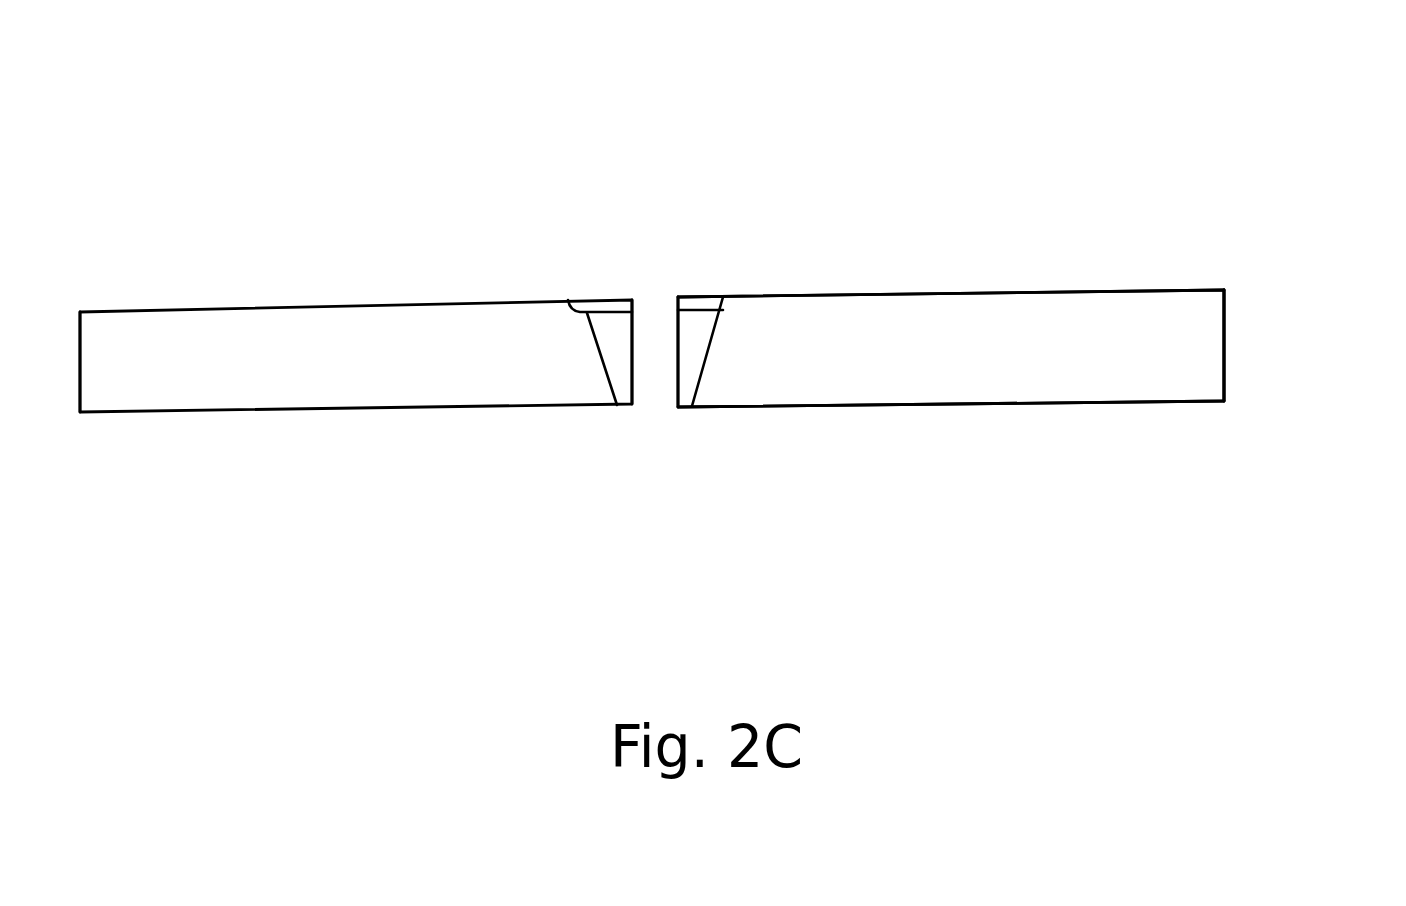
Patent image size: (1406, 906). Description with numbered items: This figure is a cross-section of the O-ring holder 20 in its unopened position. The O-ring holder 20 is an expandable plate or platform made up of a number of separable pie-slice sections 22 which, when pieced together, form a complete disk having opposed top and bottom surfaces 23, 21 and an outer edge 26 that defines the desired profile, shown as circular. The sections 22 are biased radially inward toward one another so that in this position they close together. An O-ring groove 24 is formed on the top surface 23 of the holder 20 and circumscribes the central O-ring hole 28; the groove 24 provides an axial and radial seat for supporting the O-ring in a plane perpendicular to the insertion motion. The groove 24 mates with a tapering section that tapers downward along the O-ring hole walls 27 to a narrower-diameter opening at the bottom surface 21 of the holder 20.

The O-ring holder 20 is at (1027, 253).
The bottom surface 21 is at (812, 407).
The O-ring holder section 22 is at (185, 378).
The top surface 23 is at (800, 293).
The O-ring groove 24 is at (715, 301).
The outer edge 26 is at (1229, 337).
The O-ring hole wall 27 is at (693, 347).
The O-ring hole 28 is at (655, 432).